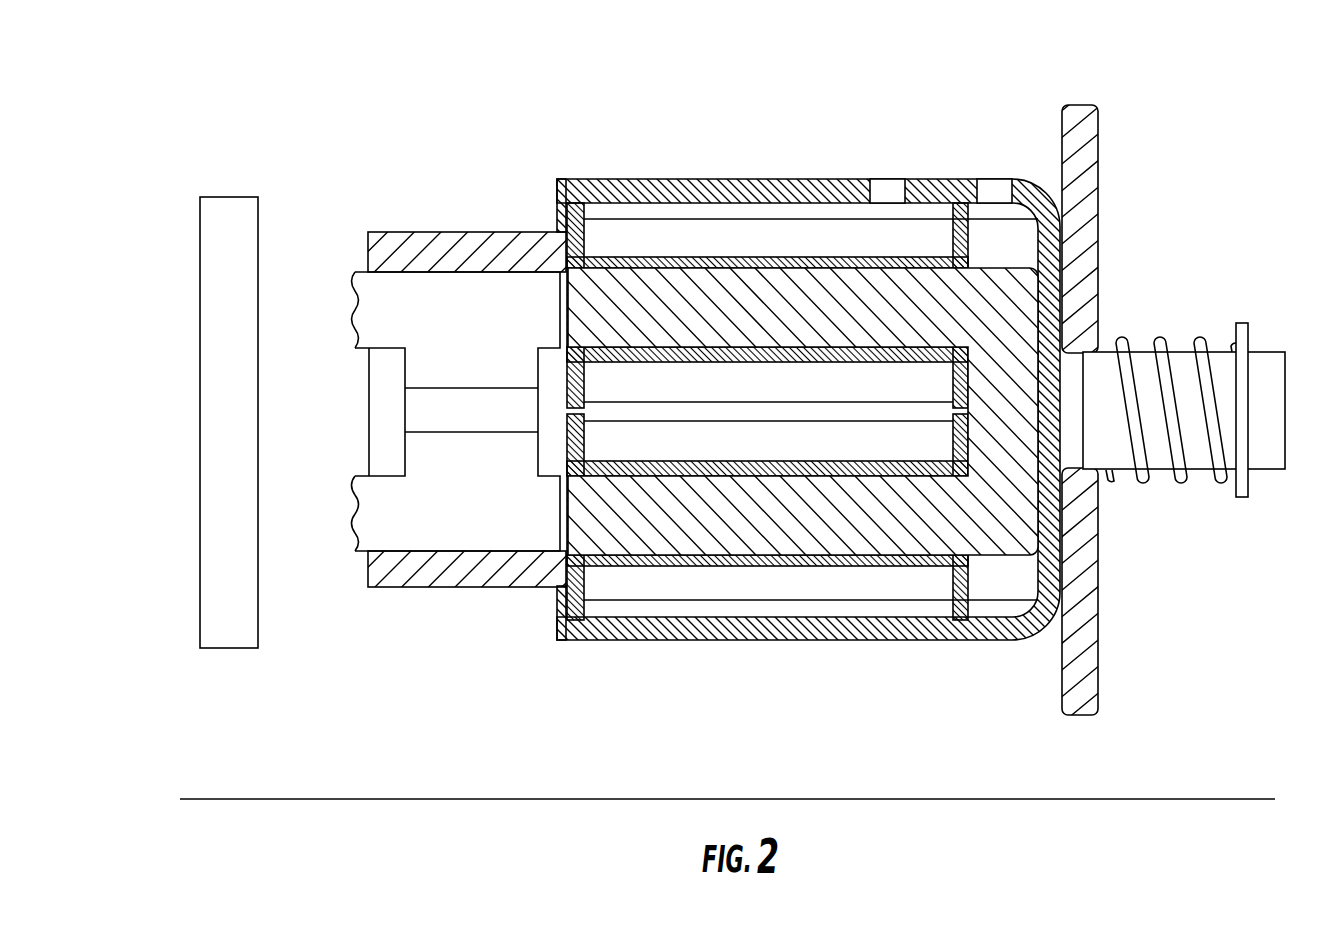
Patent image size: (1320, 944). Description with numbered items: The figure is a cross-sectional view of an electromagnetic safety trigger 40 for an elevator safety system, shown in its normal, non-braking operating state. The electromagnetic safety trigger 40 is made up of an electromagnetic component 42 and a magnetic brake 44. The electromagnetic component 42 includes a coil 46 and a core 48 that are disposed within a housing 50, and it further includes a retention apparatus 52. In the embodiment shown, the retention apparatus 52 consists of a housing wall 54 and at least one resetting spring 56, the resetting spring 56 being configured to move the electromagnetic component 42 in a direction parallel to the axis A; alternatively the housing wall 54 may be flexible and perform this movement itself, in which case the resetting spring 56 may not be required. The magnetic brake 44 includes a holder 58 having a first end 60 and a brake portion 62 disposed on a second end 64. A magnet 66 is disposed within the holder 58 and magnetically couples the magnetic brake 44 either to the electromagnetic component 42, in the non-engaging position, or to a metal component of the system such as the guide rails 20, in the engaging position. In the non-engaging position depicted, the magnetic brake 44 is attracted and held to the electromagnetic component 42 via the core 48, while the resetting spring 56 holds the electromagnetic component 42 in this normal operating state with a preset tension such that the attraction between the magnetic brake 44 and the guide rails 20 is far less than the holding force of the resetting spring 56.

The guide rails 20 is at (228, 648).
The electromagnetic safety trigger 40 is at (1203, 150).
The electromagnetic component 42 is at (834, 688).
The magnetic brake 44 is at (461, 407).
The coil 46 is at (801, 235).
The core 48 is at (713, 535).
The housing 50 is at (711, 406).
The retention apparatus 52 is at (1128, 408).
The housing wall 54 is at (1098, 157).
The resetting spring 56 is at (1200, 483).
The holder 58 is at (428, 232).
The first end 60 is at (553, 590).
The brake portion 62 is at (350, 545).
The second end 64 is at (369, 589).
The magnet 66 is at (487, 405).
The axis A is at (1079, 803).